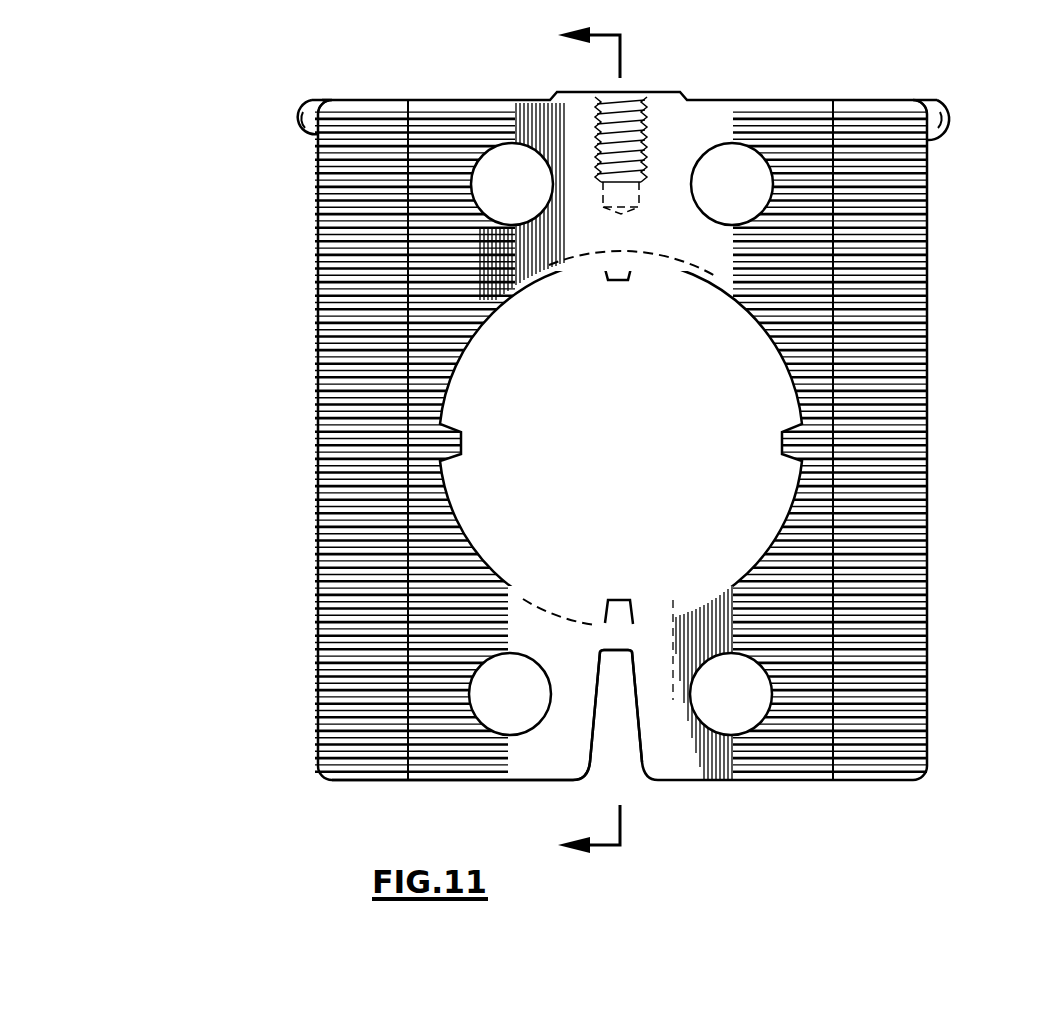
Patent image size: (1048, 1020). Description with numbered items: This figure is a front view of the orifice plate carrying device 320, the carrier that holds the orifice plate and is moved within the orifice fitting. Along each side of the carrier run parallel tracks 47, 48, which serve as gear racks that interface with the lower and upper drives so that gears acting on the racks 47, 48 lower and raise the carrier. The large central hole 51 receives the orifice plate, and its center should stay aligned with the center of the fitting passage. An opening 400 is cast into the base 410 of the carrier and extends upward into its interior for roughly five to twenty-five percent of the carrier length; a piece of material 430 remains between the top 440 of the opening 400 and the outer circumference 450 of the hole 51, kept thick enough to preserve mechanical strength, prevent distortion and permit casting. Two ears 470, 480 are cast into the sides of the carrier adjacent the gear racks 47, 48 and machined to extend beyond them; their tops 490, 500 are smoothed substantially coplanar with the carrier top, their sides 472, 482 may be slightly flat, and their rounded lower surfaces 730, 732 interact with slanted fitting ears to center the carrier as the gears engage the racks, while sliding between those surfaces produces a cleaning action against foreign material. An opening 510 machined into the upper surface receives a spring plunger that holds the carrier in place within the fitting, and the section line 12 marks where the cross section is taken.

The section line 12- 12 is at (589, 440).
The parallel track (gear rack) 47 is at (878, 268).
The parallel track (gear rack) 48 is at (335, 300).
The hole 51 is at (450, 362).
The orifice plate carrying device 320 is at (712, 782).
The opening 400 is at (640, 742).
The base 410 is at (525, 782).
The piece of material (section) 430 is at (645, 625).
The top of opening 440 is at (603, 652).
The outer circumference of hole 450 is at (580, 606).
The ear 470 is at (940, 125).
The side of ear (flat surface) 472 is at (950, 115).
The ear 480 is at (304, 128).
The side of ear (flat surface) 482 is at (302, 118).
The top of ear 490 is at (937, 100).
The top of ear 500 is at (312, 100).
The opening (for spring plunger) 510 is at (632, 97).
The rounded surface (lower surface of ear) 730 is at (928, 143).
The rounded surface (lower surface of ear) 732 is at (318, 140).